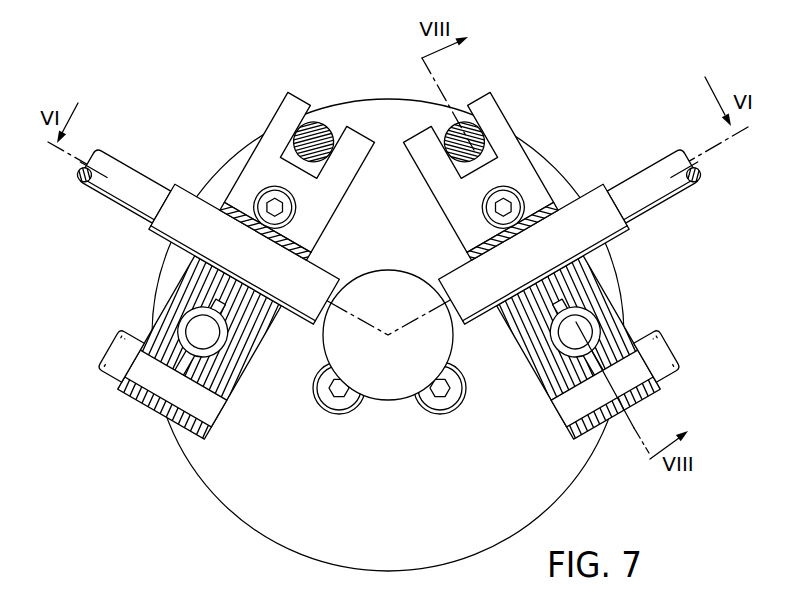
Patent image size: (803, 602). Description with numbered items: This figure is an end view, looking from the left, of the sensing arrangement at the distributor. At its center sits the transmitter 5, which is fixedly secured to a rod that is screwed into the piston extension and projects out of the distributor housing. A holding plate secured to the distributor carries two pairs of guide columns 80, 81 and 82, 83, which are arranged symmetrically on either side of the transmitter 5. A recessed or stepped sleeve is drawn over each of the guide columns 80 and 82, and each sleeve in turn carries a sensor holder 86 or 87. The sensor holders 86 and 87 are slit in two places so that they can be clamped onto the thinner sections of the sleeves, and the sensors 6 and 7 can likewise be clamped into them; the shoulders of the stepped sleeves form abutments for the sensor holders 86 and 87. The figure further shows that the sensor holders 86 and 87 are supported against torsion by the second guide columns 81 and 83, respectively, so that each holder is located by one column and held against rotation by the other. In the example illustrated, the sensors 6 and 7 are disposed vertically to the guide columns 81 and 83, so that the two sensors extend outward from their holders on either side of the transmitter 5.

The transmitter 5 is at (385, 390).
The sensor 6 is at (592, 208).
The sensor 7 is at (188, 207).
The guide column 80 is at (576, 328).
The guide column 81 is at (460, 132).
The guide column 82 is at (202, 333).
The guide column 83 is at (320, 123).
The sensor holder 86 is at (515, 148).
The sensor holder 87 is at (267, 162).